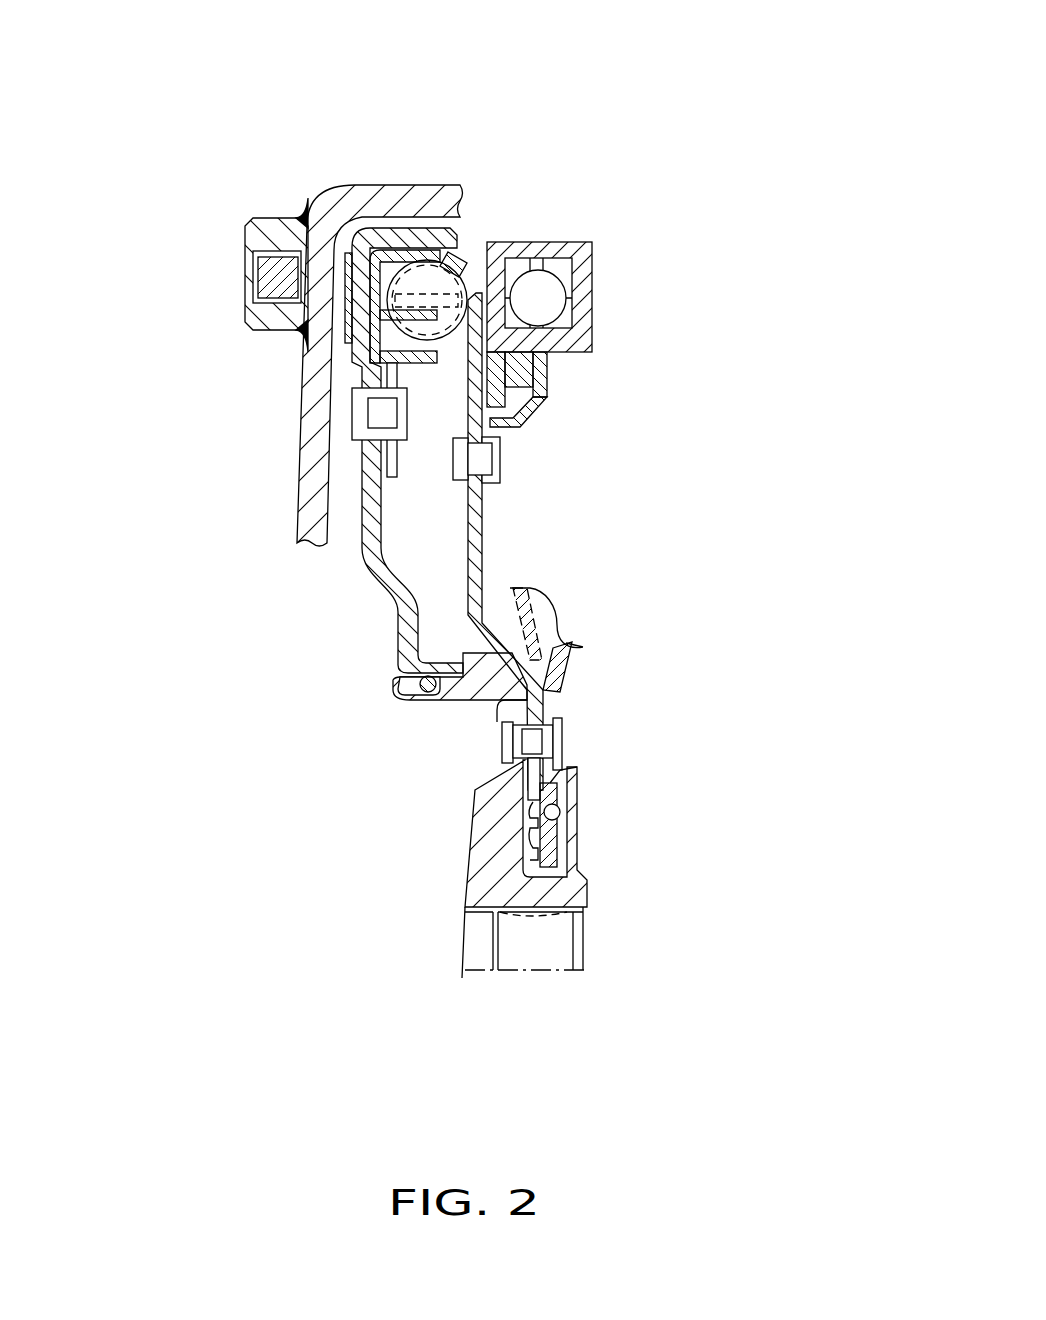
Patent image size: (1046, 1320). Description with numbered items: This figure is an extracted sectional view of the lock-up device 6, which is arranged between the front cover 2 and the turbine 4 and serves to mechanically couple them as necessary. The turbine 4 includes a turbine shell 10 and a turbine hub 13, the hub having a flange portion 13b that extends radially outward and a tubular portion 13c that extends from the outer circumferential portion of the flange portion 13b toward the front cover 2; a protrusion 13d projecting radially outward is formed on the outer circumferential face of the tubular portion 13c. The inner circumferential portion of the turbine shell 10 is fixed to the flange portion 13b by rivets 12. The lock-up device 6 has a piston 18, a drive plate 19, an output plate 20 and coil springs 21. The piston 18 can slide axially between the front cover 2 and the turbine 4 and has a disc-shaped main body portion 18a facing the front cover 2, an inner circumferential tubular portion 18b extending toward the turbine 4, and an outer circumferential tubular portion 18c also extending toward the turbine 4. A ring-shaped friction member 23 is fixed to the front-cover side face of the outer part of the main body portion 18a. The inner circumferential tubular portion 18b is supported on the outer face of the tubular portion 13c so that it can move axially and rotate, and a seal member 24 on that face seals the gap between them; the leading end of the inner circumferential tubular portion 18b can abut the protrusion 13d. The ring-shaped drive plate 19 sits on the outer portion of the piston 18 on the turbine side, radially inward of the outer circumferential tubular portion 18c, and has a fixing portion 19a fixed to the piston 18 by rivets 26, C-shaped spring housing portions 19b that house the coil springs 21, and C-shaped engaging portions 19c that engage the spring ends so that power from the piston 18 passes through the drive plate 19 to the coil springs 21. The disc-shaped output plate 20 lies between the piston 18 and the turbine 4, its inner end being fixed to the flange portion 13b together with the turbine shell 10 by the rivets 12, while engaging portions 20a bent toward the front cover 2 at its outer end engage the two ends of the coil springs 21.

The front cover 2 is at (305, 428).
The turbine 4 is at (583, 594).
The lock-up device 6 is at (349, 577).
The turbine shell 10 is at (513, 588).
The rivets 12 is at (540, 737).
The turbine hub 13 is at (436, 898).
The flange portion 13b is at (563, 705).
The tubular portion 13c is at (457, 692).
The protrusion 13d is at (483, 665).
The piston 18 is at (309, 375).
The main body portion 18a is at (370, 497).
The inner circumferential tubular portion 18b is at (447, 665).
The outer circumferential tubular portion 18c is at (426, 237).
The drive plate 19 is at (433, 276).
The fixing portion 19a is at (387, 460).
The spring housing portions 19b is at (462, 266).
The engaging portions 19c is at (345, 350).
The output plate 20 is at (500, 514).
The engaging portions 20a is at (393, 260).
The coil springs 21 is at (478, 258).
The friction member 23 is at (317, 210).
The seal member 24 is at (418, 684).
The rivets 26 is at (383, 412).